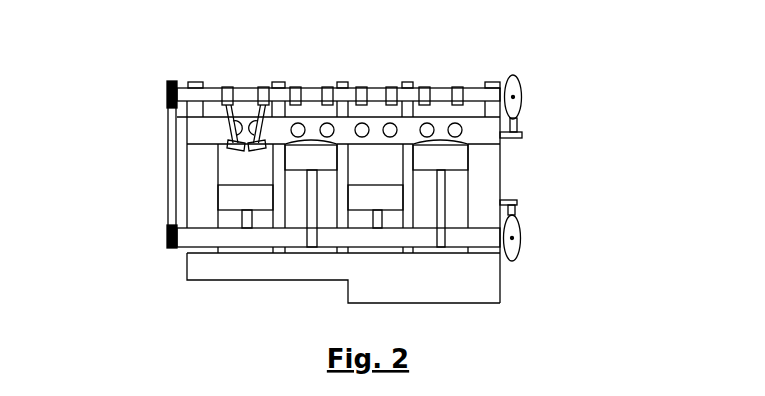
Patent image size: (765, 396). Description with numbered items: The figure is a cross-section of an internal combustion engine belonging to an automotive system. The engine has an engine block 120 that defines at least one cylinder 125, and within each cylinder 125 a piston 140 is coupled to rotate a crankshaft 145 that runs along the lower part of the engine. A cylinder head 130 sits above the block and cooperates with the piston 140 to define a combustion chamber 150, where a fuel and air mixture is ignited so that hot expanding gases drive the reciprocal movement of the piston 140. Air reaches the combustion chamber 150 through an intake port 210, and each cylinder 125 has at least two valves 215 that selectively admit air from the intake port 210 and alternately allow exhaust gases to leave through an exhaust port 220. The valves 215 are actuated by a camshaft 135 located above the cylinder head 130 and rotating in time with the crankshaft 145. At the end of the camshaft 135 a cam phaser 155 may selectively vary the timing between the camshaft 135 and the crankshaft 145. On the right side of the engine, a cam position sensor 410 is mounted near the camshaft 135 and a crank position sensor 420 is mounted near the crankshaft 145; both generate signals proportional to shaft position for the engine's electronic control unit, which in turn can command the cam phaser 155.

The engine block 120 is at (187, 185).
The cylinder 125 is at (350, 170).
The cylinder head 130 is at (187, 138).
The camshaft 135 is at (243, 88).
The piston 140 is at (378, 195).
The crankshaft 145 is at (213, 238).
The combustion chamber 150 is at (462, 152).
The cam phaser 155 is at (163, 93).
The intake port 210 is at (371, 100).
The valves 215 is at (232, 143).
The exhaust port 220 is at (318, 120).
The cam position sensor 410 is at (518, 132).
The crank position sensor 420 is at (518, 202).